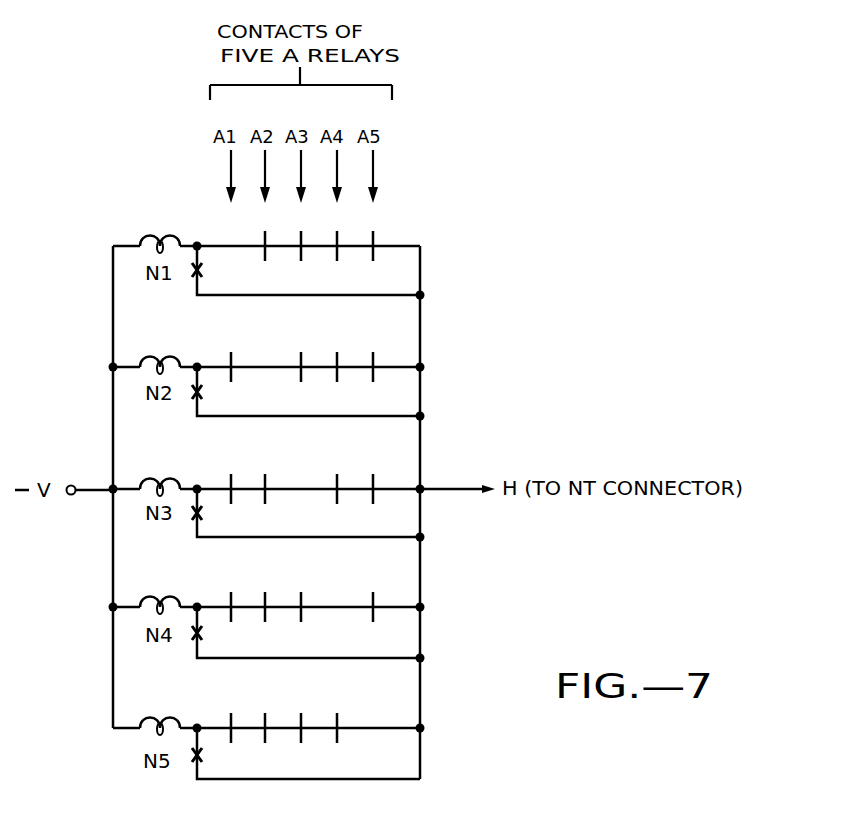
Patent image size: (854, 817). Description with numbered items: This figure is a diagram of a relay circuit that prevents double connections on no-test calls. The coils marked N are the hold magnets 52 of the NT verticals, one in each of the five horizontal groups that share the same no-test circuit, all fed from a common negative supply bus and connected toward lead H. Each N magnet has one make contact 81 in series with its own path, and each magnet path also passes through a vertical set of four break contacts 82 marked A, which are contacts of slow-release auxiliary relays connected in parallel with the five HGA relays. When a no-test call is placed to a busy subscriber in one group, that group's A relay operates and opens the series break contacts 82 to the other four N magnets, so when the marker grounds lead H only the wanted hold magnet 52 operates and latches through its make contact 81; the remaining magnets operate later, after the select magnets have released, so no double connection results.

The hold magnet 52 is at (153, 358).
The make contact 81 is at (190, 392).
The break contact 82 is at (265, 261).